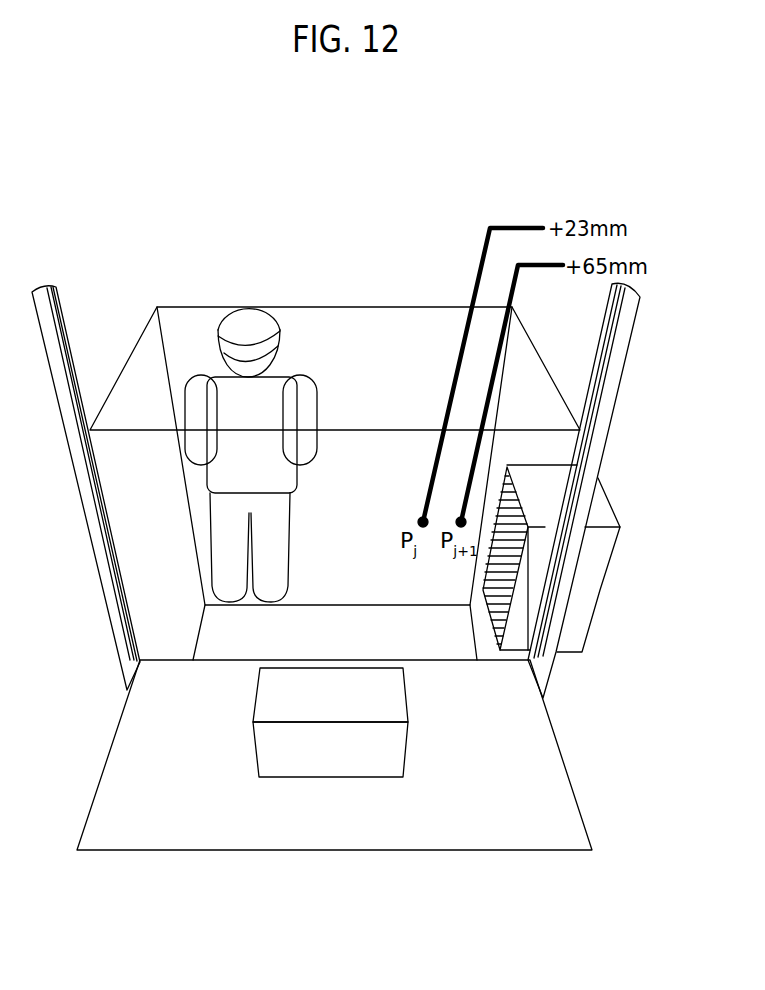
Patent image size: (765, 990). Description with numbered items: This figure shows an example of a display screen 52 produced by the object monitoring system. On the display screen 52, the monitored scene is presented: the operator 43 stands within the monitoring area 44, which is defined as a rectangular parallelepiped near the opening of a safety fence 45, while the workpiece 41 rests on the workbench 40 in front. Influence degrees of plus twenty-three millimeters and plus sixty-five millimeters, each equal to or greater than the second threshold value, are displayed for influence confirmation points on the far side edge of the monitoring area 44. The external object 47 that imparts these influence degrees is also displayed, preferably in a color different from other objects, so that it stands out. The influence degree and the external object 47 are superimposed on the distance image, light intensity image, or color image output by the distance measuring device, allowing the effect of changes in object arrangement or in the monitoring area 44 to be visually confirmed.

The workbench 40 is at (548, 773).
The workpiece 41 is at (390, 695).
The operator 43 is at (246, 316).
The monitoring area 44 is at (367, 313).
The safety fence 45 is at (627, 330).
The external object 47 is at (600, 517).
The display screen 52 is at (112, 214).